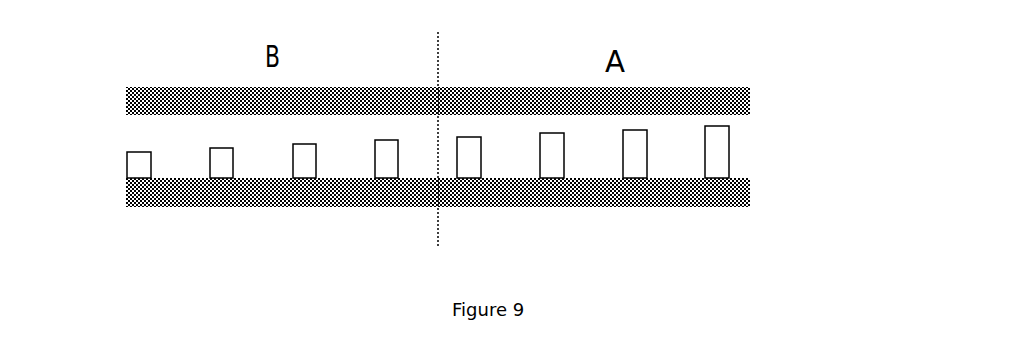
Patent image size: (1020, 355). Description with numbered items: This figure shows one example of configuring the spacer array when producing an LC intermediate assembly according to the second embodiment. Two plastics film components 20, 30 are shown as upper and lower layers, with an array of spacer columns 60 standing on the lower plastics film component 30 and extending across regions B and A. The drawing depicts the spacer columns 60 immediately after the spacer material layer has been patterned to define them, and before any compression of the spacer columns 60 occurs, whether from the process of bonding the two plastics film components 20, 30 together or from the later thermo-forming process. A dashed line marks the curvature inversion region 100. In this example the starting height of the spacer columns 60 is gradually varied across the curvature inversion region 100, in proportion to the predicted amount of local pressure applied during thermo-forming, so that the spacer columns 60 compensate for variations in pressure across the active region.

The plastics film component 20 is at (700, 102).
The plastics film component 30 is at (702, 200).
The spacer columns 60 is at (138, 163).
The curvature inversion region 100 is at (436, 123).